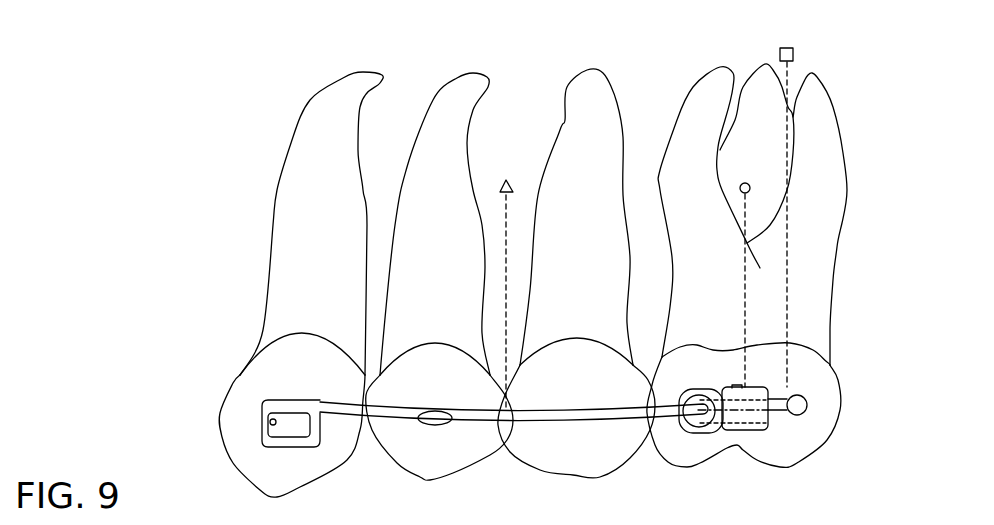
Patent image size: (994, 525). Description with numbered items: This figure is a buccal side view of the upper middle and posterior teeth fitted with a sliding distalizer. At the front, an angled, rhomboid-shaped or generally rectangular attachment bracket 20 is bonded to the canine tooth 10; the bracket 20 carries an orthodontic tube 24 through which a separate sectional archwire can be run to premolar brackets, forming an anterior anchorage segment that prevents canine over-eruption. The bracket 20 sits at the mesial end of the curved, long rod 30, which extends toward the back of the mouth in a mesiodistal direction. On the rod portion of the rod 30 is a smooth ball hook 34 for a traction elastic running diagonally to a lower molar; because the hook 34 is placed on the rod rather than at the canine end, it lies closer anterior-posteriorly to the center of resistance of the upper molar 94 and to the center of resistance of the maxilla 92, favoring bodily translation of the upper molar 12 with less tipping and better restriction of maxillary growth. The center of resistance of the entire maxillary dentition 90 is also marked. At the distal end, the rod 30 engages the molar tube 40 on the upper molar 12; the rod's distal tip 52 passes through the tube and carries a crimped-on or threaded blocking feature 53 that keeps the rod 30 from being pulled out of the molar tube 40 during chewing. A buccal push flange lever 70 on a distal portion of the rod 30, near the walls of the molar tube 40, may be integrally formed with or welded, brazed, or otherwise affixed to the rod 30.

The canine tooth 10 is at (250, 380).
The upper molar 12 is at (823, 365).
The attachment bracket 20 is at (263, 443).
The orthodontic tube 24 is at (297, 425).
The rod 30 is at (363, 418).
The ball hook 34 is at (453, 422).
The molar tube 40 is at (763, 397).
The distal tip 52 is at (780, 412).
The blocking feature 53 is at (808, 405).
The buccal push flange lever 70 is at (692, 427).
The maxillary dentition center of resistance 90 is at (506, 282).
The maxilla center of resistance 92 is at (787, 203).
The upper molar center of resistance 94 is at (746, 274).